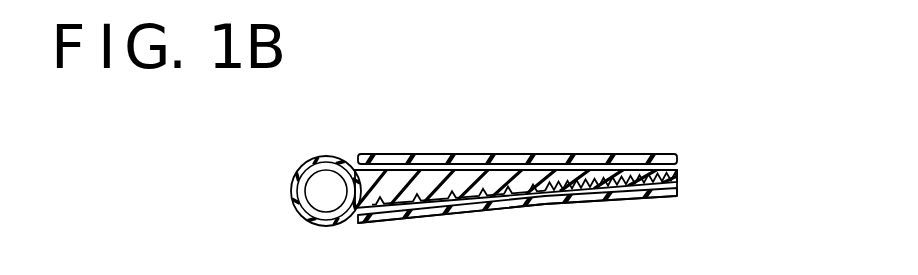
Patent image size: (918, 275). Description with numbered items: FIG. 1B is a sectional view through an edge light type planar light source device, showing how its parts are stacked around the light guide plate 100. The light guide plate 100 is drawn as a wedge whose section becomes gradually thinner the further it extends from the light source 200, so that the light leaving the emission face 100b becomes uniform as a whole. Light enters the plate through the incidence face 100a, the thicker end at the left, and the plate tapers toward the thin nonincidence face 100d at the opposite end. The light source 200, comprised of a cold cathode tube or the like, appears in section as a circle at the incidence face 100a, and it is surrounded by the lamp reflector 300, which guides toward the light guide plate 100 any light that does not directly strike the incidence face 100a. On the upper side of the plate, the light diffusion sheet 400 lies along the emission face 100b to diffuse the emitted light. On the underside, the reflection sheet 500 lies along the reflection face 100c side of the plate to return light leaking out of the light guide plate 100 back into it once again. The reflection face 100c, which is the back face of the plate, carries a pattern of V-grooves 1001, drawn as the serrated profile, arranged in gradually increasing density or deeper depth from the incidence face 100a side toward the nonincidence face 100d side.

The light guide plate 100 is at (520, 174).
The incidence face 100a is at (373, 222).
The emission face 100b is at (424, 176).
The reflection face 100c is at (455, 186).
The nonincidence face 100d is at (677, 196).
The V-grooves 1001 is at (539, 194).
The light source 200 is at (331, 205).
The lamp reflector 300 is at (320, 226).
The light diffusion sheet 400 is at (602, 154).
The reflection sheet 500 is at (605, 200).